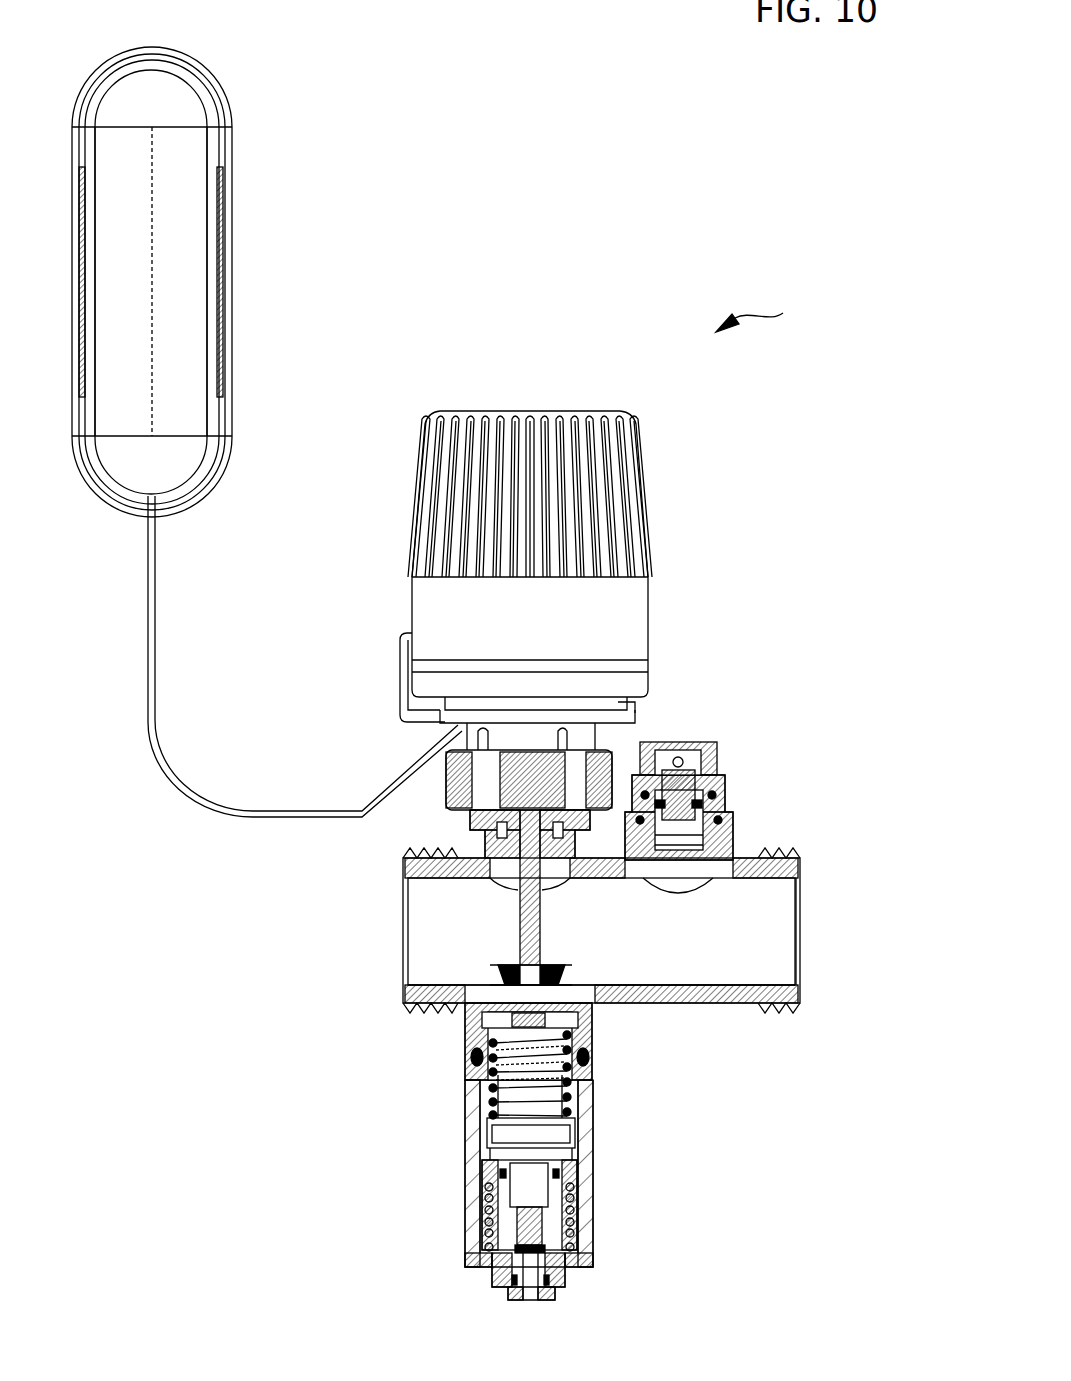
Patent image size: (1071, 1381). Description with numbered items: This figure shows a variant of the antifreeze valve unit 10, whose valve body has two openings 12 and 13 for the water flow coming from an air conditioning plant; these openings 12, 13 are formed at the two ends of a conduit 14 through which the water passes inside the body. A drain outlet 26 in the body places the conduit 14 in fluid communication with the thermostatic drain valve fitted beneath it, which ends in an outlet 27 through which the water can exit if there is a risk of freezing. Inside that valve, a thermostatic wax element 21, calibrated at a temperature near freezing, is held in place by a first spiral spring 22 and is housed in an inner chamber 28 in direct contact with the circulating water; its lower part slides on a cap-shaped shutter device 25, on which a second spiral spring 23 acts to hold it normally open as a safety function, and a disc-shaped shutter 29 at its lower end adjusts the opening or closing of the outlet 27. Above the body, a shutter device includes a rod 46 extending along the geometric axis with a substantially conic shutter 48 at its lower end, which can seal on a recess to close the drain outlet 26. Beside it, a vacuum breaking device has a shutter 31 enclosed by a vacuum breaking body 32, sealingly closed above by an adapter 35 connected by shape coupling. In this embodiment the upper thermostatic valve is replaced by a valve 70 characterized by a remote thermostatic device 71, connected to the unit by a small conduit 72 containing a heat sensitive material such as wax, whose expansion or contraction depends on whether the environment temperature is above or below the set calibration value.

The antifreeze valve unit 10 is at (763, 307).
The opening 12 is at (410, 907).
The opening 13 is at (800, 910).
The conduit 14 is at (738, 968).
The thermostatic wax element 21 is at (510, 1135).
The first spiral spring 22 is at (520, 1085).
The second spiral spring 23 is at (570, 1220).
The cap-shaped shutter device 25 is at (485, 1165).
The drain outlet 26 is at (585, 1028).
The outlet 27 is at (545, 1300).
The inner chamber 28 is at (572, 1155).
The disc-shaped shutter 29 is at (500, 1268).
The shutter 31 is at (690, 790).
The vacuum breaking body 32 is at (730, 806).
The adapter 35 is at (680, 742).
The rod 46 is at (515, 912).
The conic shutter 48 is at (495, 965).
The valve 70 is at (613, 625).
The remote thermostatic device 71 is at (182, 291).
The small conduit 72 is at (160, 625).